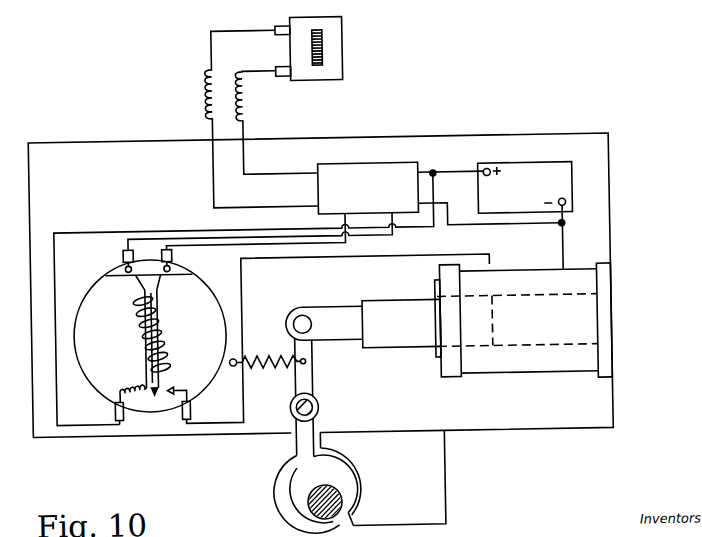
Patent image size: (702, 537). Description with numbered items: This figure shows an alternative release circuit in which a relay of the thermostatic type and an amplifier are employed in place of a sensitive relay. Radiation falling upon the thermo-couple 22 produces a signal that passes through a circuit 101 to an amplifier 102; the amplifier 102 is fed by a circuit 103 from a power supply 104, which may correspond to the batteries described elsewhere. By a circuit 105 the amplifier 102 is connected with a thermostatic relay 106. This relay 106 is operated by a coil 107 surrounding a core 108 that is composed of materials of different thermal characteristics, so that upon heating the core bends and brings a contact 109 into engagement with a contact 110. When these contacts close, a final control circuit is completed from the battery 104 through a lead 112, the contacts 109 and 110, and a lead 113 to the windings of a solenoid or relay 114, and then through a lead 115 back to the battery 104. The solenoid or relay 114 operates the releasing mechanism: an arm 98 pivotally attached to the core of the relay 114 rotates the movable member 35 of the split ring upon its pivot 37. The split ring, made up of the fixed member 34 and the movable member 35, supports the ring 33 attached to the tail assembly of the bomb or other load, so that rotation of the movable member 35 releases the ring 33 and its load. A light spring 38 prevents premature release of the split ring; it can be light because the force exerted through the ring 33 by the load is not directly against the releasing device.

The thermo-couple 22 is at (305, 52).
The ring 33 is at (343, 500).
The fixed member 34 is at (387, 471).
The movable member 35 is at (283, 478).
The pivot 37 is at (316, 406).
The spring 38 is at (270, 357).
The arm 98 is at (311, 378).
The circuit 101 is at (214, 176).
The amplifier 102 is at (368, 188).
The circuit 103 is at (459, 205).
The power supply 104 is at (525, 188).
The circuit 105 is at (222, 238).
The thermostatic relay 106 is at (208, 286).
The coil 107 is at (148, 345).
The core 108 is at (146, 320).
The contact 109 is at (160, 384).
The contact 110 is at (173, 386).
The lead 112 is at (110, 420).
The lead 113 is at (203, 421).
The solenoid or relay 114 is at (486, 321).
The lead 115 is at (561, 246).